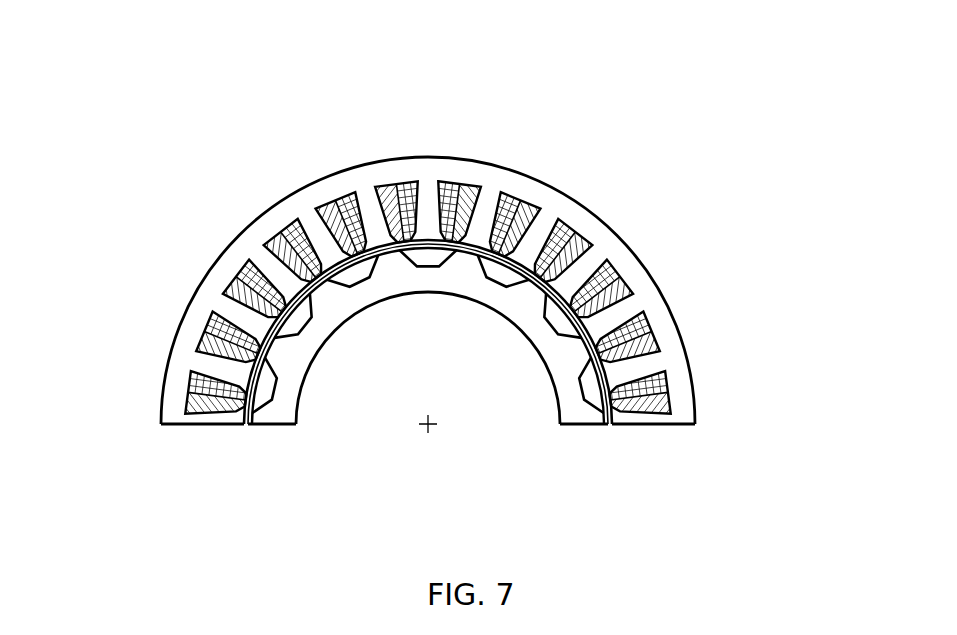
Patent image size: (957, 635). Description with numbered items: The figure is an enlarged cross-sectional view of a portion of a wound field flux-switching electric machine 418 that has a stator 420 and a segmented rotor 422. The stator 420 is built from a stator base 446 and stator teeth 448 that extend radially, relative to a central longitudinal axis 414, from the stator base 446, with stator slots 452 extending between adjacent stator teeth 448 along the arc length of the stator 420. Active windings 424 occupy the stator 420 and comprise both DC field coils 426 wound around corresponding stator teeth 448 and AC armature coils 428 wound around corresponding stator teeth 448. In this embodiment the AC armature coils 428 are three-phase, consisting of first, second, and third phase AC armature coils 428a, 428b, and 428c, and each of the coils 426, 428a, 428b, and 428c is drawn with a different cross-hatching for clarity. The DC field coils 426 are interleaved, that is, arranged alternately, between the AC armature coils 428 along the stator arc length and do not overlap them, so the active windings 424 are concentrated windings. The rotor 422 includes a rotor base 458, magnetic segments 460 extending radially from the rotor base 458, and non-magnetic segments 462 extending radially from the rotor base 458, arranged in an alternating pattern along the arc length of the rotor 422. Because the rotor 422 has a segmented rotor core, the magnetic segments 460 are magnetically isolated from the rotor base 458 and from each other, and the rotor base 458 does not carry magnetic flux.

The central longitudinal axis 414 is at (428, 431).
The electric machine 418 is at (642, 63).
The stator 420 is at (688, 425).
The rotor 422 is at (568, 425).
The active windings 424 is at (315, 229).
The DC field coils 426 is at (318, 236).
The AC armature coils 428 is at (500, 200).
The first phase AC armature coil 428a is at (190, 380).
The second phase AC armature coil 428b is at (238, 292).
The third phase AC armature coil 428c is at (314, 205).
The stator base 446 is at (680, 340).
The stator teeth 448 is at (284, 233).
The stator slots 452 is at (392, 196).
The rotor base 458 is at (302, 351).
The magnetic segments 460 is at (368, 278).
The non-magnetic segments 462 is at (326, 296).